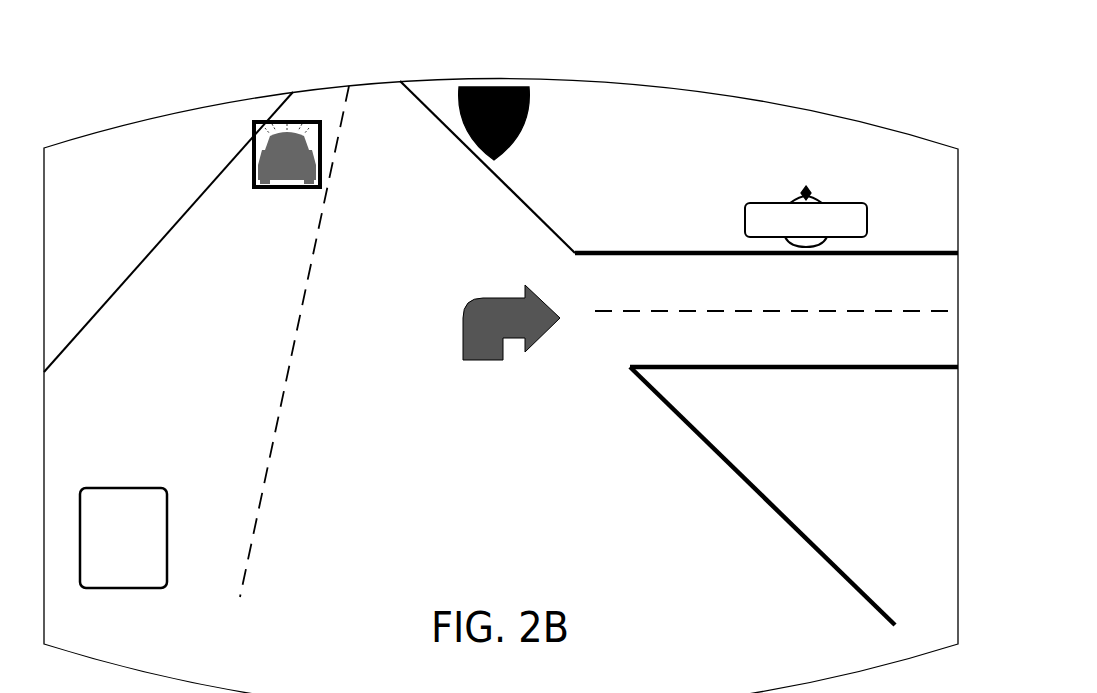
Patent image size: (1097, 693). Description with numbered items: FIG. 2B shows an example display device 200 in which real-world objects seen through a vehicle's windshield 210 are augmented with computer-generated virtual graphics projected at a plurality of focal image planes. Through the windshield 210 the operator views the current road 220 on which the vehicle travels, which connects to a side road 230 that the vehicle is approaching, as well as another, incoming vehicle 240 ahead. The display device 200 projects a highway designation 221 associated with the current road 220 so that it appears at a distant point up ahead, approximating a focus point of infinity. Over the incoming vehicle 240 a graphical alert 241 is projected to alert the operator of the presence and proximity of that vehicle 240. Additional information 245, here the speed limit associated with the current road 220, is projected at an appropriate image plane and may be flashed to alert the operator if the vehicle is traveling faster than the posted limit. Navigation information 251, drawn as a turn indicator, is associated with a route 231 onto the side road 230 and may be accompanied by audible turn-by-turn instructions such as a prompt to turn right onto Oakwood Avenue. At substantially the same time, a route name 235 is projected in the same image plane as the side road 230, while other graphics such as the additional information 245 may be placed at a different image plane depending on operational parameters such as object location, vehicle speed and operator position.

The display device 200 is at (158, 108).
The windshield 210 is at (732, 95).
The road 220 is at (141, 265).
The highway designation 221 is at (528, 137).
The side road 230 is at (660, 251).
The route 231 is at (757, 370).
The route name 235 is at (797, 197).
The vehicle 240 is at (285, 187).
The graphical alert 241 is at (250, 187).
The additional information 245 is at (127, 487).
The navigation information 251 is at (482, 360).